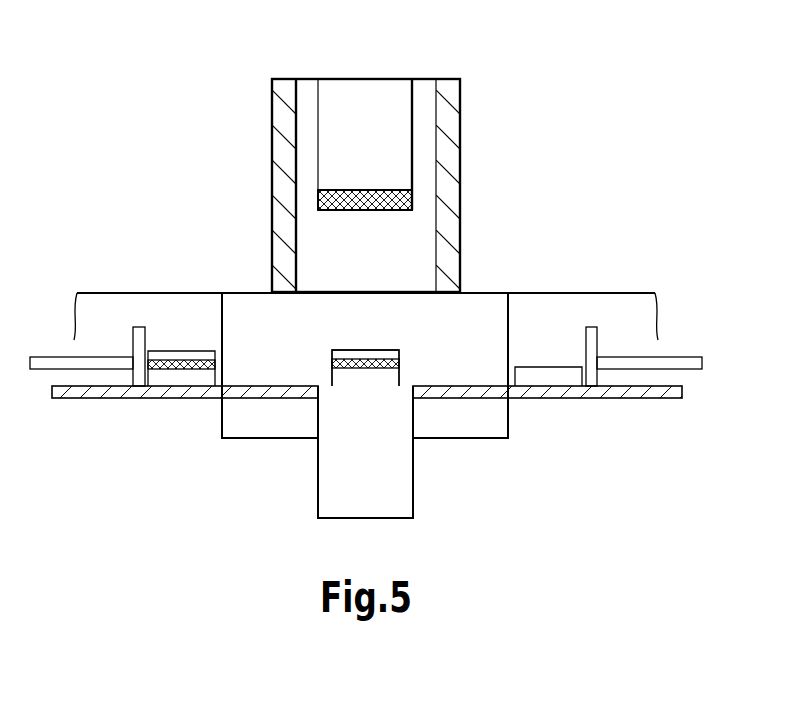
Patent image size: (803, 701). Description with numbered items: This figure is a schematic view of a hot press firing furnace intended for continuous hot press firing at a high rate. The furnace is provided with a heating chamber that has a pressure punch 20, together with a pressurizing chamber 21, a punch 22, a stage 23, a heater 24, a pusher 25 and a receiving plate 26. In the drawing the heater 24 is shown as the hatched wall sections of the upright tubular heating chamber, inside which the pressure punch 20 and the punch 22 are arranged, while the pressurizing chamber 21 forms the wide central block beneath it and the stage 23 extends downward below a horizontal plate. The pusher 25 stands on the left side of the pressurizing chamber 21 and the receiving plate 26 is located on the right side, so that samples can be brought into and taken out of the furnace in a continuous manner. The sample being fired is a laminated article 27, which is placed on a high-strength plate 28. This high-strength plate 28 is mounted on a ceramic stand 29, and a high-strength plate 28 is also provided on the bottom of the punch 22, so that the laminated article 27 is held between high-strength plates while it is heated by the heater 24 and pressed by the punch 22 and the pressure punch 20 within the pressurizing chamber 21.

The pressure punch 20 is at (412, 252).
The pressurizing chamber 21 is at (255, 303).
The punch 22 is at (370, 93).
The stage 23 is at (393, 467).
The heater 24 is at (282, 137).
The pusher 25 is at (130, 347).
The receiving plate 26 is at (592, 347).
The laminated article 27 is at (372, 355).
The high-strength plate 28 is at (413, 200).
The ceramic stand 29 is at (183, 378).